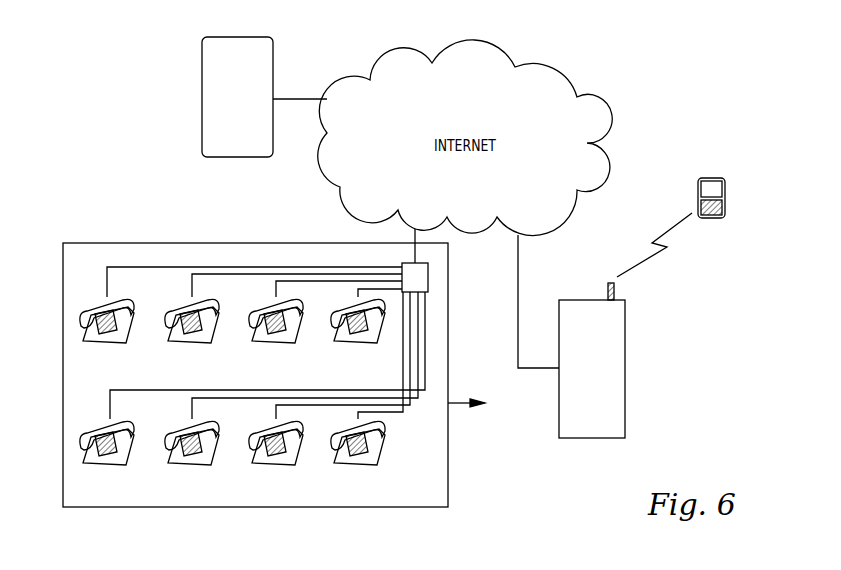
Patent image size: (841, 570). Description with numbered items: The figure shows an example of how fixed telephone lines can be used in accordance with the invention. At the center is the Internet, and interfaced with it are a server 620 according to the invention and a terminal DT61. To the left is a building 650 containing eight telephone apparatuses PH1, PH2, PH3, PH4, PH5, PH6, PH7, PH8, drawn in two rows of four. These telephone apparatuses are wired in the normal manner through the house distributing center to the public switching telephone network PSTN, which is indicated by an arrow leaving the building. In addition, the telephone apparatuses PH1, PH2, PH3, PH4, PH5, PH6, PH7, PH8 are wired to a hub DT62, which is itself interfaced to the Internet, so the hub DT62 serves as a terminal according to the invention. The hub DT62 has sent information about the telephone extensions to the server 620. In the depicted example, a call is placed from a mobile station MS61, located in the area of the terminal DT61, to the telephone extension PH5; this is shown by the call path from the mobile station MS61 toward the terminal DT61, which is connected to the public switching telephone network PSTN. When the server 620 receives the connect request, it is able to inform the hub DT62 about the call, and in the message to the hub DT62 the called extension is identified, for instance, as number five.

The server 620 is at (202, 96).
The building 650 is at (262, 242).
The hub DT62 is at (459, 285).
The terminal DT61 is at (564, 376).
The mobile station MS61 is at (681, 212).
The public switching telephone network PSTN is at (488, 404).
The telephone apparatus PH1 is at (241, 321).
The telephone apparatus PH2 is at (283, 324).
The telephone apparatus PH3 is at (325, 328).
The telephone apparatus PH4 is at (366, 332).
The telephone apparatus PH5 is at (252, 395).
The telephone apparatus PH6 is at (291, 395).
The telephone apparatus PH7 is at (329, 395).
The telephone apparatus PH8 is at (367, 395).